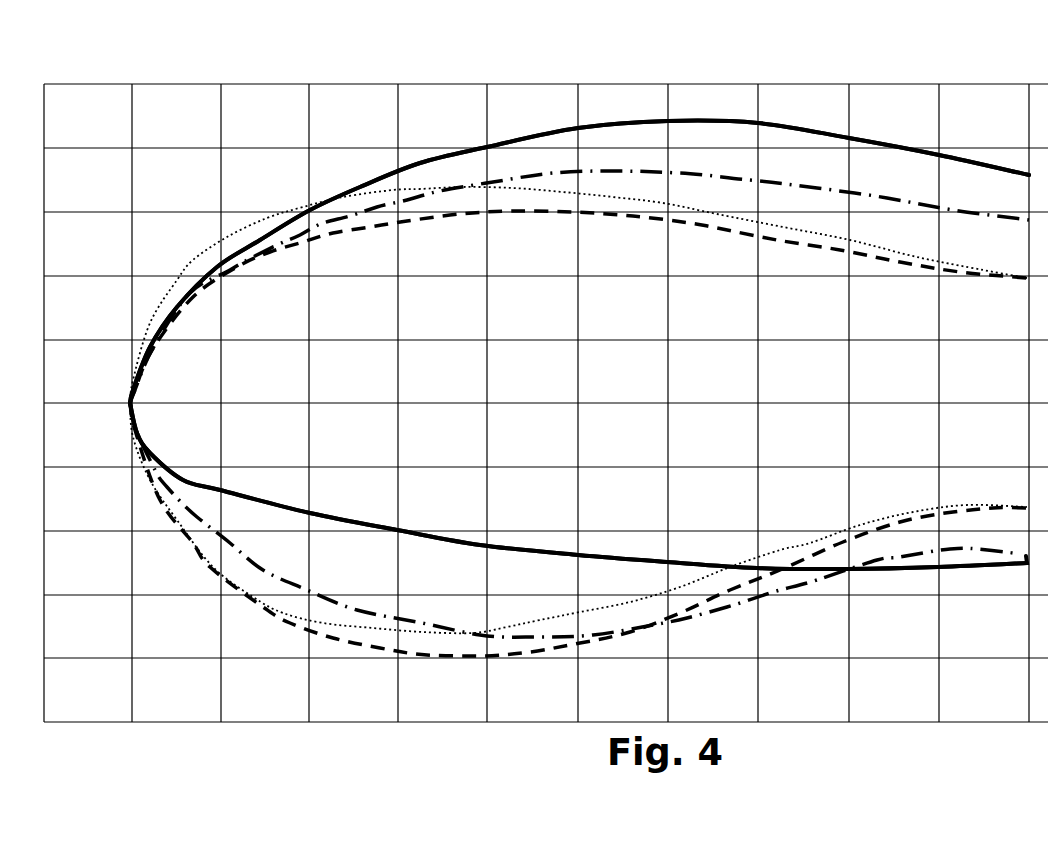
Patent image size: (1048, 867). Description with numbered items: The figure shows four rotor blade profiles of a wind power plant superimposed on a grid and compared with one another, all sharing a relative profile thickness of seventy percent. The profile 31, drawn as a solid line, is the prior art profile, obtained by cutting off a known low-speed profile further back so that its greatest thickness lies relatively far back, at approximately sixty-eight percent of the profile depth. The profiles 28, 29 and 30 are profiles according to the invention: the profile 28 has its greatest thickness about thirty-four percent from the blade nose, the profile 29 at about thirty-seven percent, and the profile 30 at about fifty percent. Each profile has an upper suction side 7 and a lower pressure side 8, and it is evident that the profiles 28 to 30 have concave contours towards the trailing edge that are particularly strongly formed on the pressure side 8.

The suction side 7 is at (427, 156).
The pressure side 8 is at (298, 660).
The profile RE-W-70-A1 28 is at (260, 227).
The profile RE-W-70-A2 29 is at (523, 207).
The profile RE-W-70-B1 30 is at (737, 178).
The prior art profile FX 77-W-700 31 is at (810, 128).